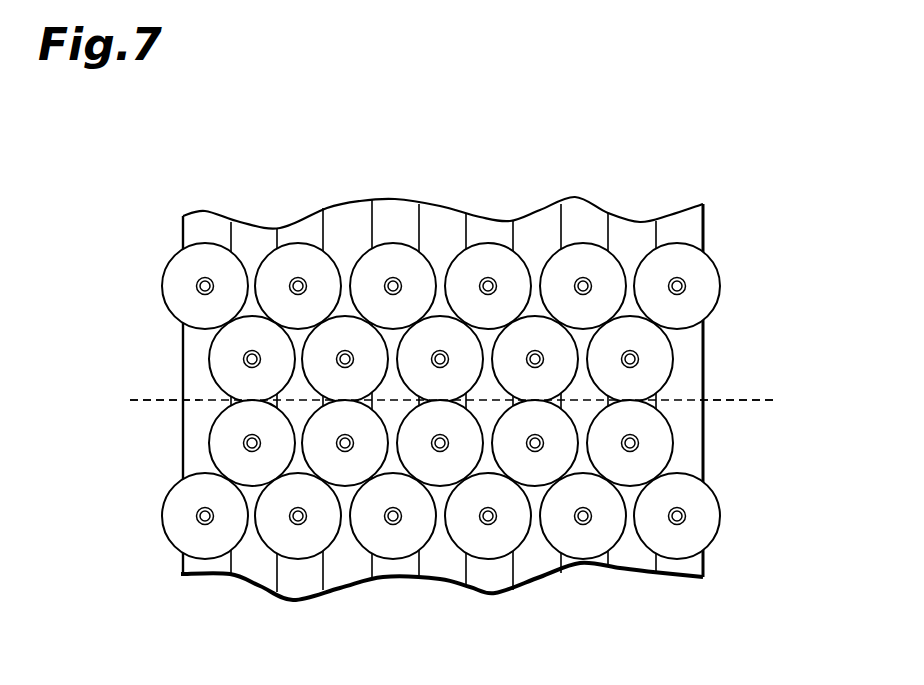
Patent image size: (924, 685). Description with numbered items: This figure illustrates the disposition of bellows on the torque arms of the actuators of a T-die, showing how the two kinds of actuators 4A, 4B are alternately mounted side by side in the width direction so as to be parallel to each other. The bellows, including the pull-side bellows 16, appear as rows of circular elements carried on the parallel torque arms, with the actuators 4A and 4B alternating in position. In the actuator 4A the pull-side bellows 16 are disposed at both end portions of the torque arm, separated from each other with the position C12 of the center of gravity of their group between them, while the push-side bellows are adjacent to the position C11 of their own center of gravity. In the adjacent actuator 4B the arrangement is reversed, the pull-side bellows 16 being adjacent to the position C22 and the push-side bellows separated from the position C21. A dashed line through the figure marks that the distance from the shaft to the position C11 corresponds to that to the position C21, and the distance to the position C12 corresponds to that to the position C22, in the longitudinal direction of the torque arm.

The pull-side bellows 16 is at (228, 358).
The actuator 4A is at (193, 566).
The actuator 4B is at (252, 573).
The position of the center of gravity of the group of the pull-side bellows C12 is at (257, 404).
The position of the center of gravity of the group of the push-side bellows C11 is at (133, 424).
The position of the center of gravity of the group of the pull-side bellows C22 is at (635, 404).
The position of the center of gravity of the group of the push-side bellows C21 is at (771, 424).